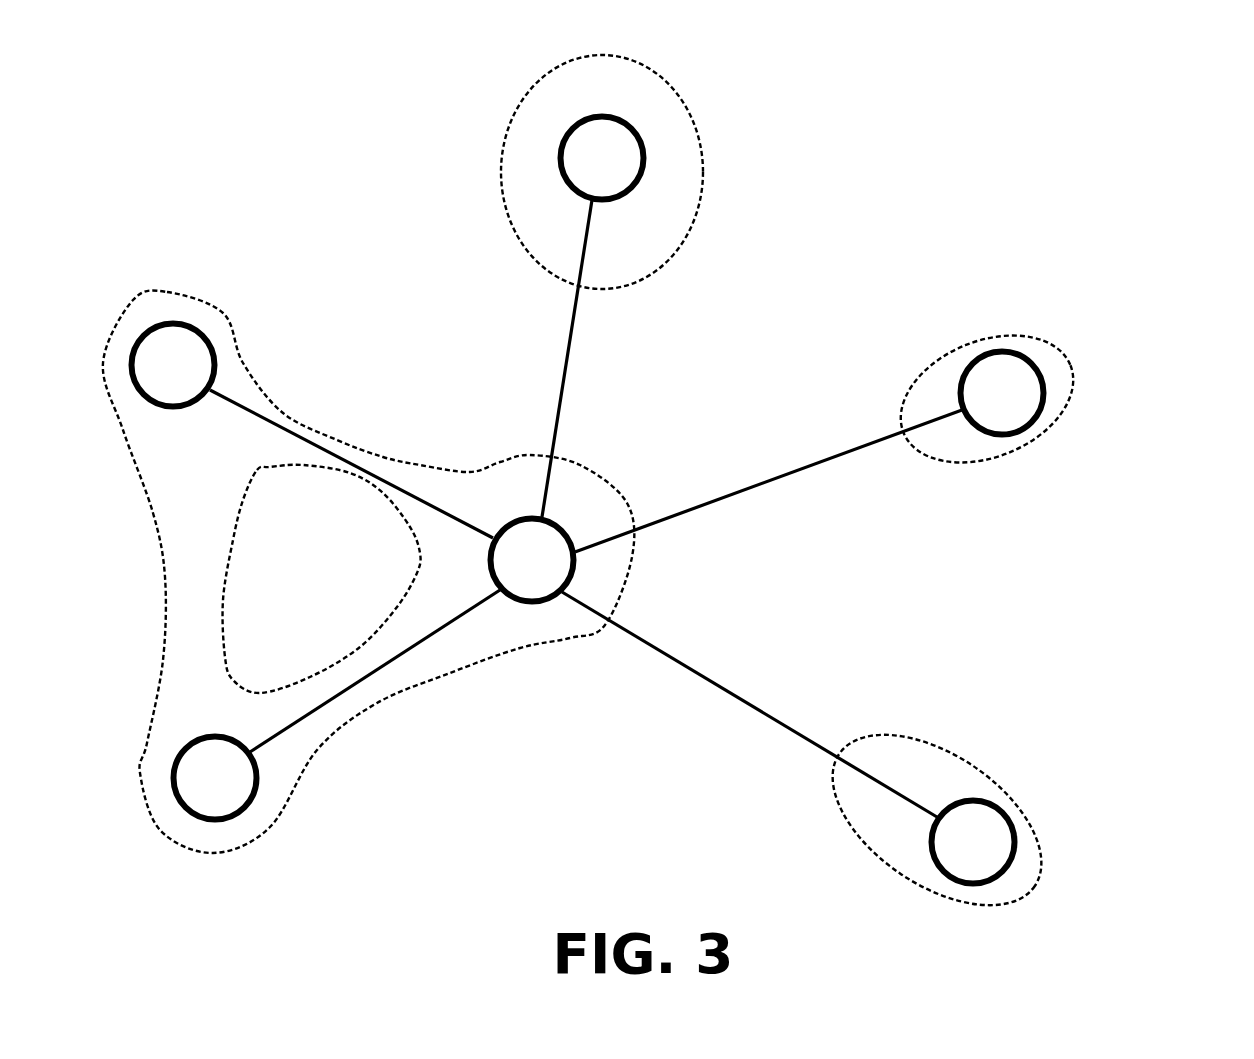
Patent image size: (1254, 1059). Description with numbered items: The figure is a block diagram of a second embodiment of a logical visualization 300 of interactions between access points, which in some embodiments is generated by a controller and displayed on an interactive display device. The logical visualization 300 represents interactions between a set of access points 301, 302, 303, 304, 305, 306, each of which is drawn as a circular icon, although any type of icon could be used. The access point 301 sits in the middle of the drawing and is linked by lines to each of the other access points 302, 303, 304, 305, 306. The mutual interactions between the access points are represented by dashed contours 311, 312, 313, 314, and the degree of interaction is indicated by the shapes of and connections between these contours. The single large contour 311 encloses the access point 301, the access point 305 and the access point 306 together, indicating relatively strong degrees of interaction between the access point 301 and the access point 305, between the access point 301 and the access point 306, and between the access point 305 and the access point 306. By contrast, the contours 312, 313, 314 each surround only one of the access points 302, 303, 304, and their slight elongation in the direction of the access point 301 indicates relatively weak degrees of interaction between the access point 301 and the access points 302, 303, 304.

The logical visualization 300 is at (1146, 108).
The access point 301 is at (515, 571).
The access point 302 is at (585, 169).
The access point 303 is at (985, 404).
The access point 304 is at (956, 853).
The access point 305 is at (198, 789).
The access point 306 is at (156, 376).
The contour 311 is at (247, 368).
The contour 312 is at (702, 167).
The contour 313 is at (1072, 368).
The contour 314 is at (1043, 863).